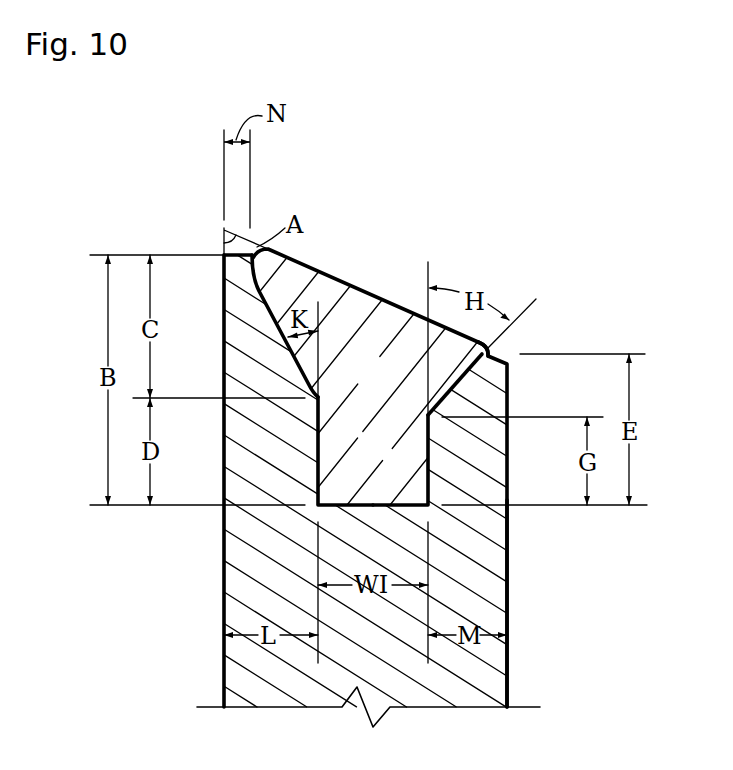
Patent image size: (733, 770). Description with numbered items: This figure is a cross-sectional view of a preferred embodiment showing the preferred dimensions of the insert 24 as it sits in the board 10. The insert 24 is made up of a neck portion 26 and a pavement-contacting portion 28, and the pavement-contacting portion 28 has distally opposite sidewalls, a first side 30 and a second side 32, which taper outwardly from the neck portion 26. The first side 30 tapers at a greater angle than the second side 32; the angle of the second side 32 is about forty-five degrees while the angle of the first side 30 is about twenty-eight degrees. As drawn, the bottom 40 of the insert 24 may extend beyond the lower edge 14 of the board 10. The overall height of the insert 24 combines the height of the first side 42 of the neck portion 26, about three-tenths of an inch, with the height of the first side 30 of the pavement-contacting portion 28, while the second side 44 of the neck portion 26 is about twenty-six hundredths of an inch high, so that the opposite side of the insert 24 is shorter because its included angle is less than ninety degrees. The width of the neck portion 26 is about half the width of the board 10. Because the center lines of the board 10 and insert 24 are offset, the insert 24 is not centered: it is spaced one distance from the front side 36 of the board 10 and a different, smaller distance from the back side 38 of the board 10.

The board 10 is at (508, 553).
The lower edge of the board 14 is at (222, 254).
The insert 24 is at (490, 352).
The neck portion 26 is at (390, 457).
The pavement-contacting portion 28 is at (390, 382).
The first side of the pavement-contacting portion 30 is at (270, 303).
The second side of the pavement-contacting portion 32 is at (477, 373).
The front side of the board 36 is at (224, 553).
The back side of the board 38 is at (508, 657).
The bottom of the insert 40 is at (362, 285).
The first side of the neck portion 42 is at (316, 450).
The second side of the neck portion 44 is at (432, 450).